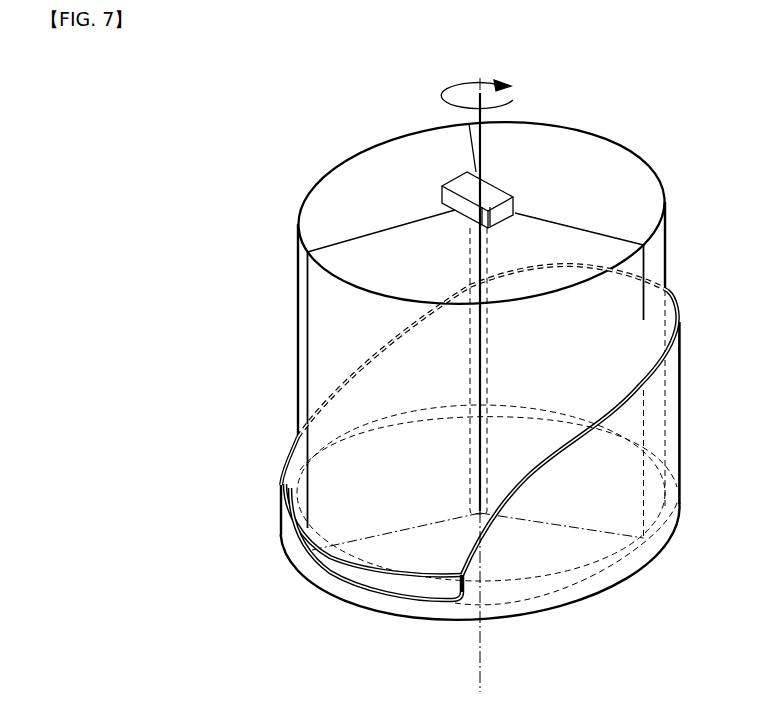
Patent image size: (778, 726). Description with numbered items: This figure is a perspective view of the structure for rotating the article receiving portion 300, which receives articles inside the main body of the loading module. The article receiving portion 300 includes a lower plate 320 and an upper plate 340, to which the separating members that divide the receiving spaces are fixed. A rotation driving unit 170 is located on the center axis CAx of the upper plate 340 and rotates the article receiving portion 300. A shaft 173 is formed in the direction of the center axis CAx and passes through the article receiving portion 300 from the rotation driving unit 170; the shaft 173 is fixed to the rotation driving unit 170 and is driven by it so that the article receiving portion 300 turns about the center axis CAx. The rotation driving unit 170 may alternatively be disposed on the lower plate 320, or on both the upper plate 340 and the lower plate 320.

The article receiving portion 300 is at (273, 407).
The upper plate 340 is at (585, 167).
The lower plate 320 is at (545, 568).
The shaft 173 is at (473, 233).
The rotation driving unit 170 is at (456, 186).
The center axis CAx is at (482, 660).